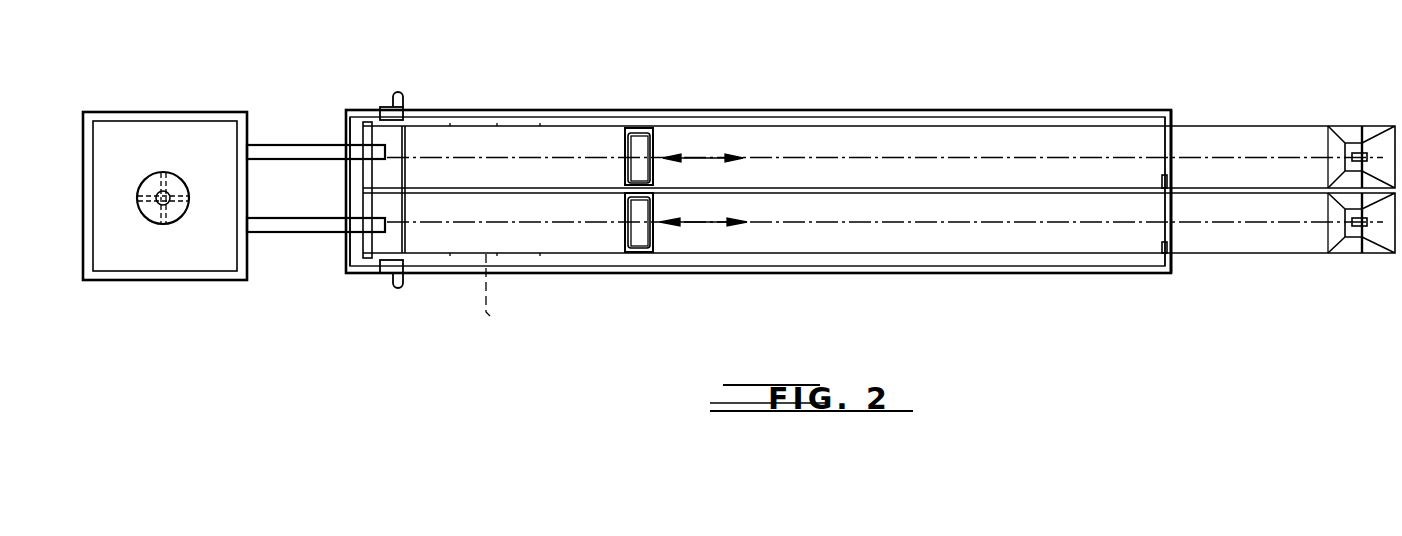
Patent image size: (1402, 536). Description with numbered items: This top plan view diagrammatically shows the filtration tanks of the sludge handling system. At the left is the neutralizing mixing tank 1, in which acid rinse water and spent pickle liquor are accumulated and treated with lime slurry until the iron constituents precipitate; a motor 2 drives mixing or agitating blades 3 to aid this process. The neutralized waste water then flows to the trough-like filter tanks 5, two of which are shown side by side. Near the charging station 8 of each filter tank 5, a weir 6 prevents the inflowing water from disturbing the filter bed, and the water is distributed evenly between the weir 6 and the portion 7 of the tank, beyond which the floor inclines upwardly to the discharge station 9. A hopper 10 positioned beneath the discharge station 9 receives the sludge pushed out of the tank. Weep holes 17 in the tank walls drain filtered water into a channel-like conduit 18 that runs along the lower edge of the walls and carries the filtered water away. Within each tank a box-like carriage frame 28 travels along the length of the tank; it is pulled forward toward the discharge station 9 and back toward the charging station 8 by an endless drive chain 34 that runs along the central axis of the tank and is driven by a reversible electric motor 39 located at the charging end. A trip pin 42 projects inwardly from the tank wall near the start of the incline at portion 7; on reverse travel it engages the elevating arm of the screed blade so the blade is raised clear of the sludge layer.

The neutralizing mixing tank 1 is at (145, 113).
The motor 2 is at (170, 197).
The mixing or agitating blades 3 is at (155, 181).
The filter tank 5 is at (506, 125).
The weir 6 is at (406, 142).
The portion of tank 7 is at (1174, 143).
The charging station 8 is at (380, 133).
The discharge station 9 is at (1331, 147).
The hopper 10 is at (1397, 130).
The weep holes 17 is at (501, 292).
The channel-like conduit 18 is at (633, 120).
The carriage frame 28 is at (625, 169).
The endless drive chain 34 is at (1212, 158).
The reversible electric motor 39 is at (398, 288).
The trip pin 42 is at (1160, 181).